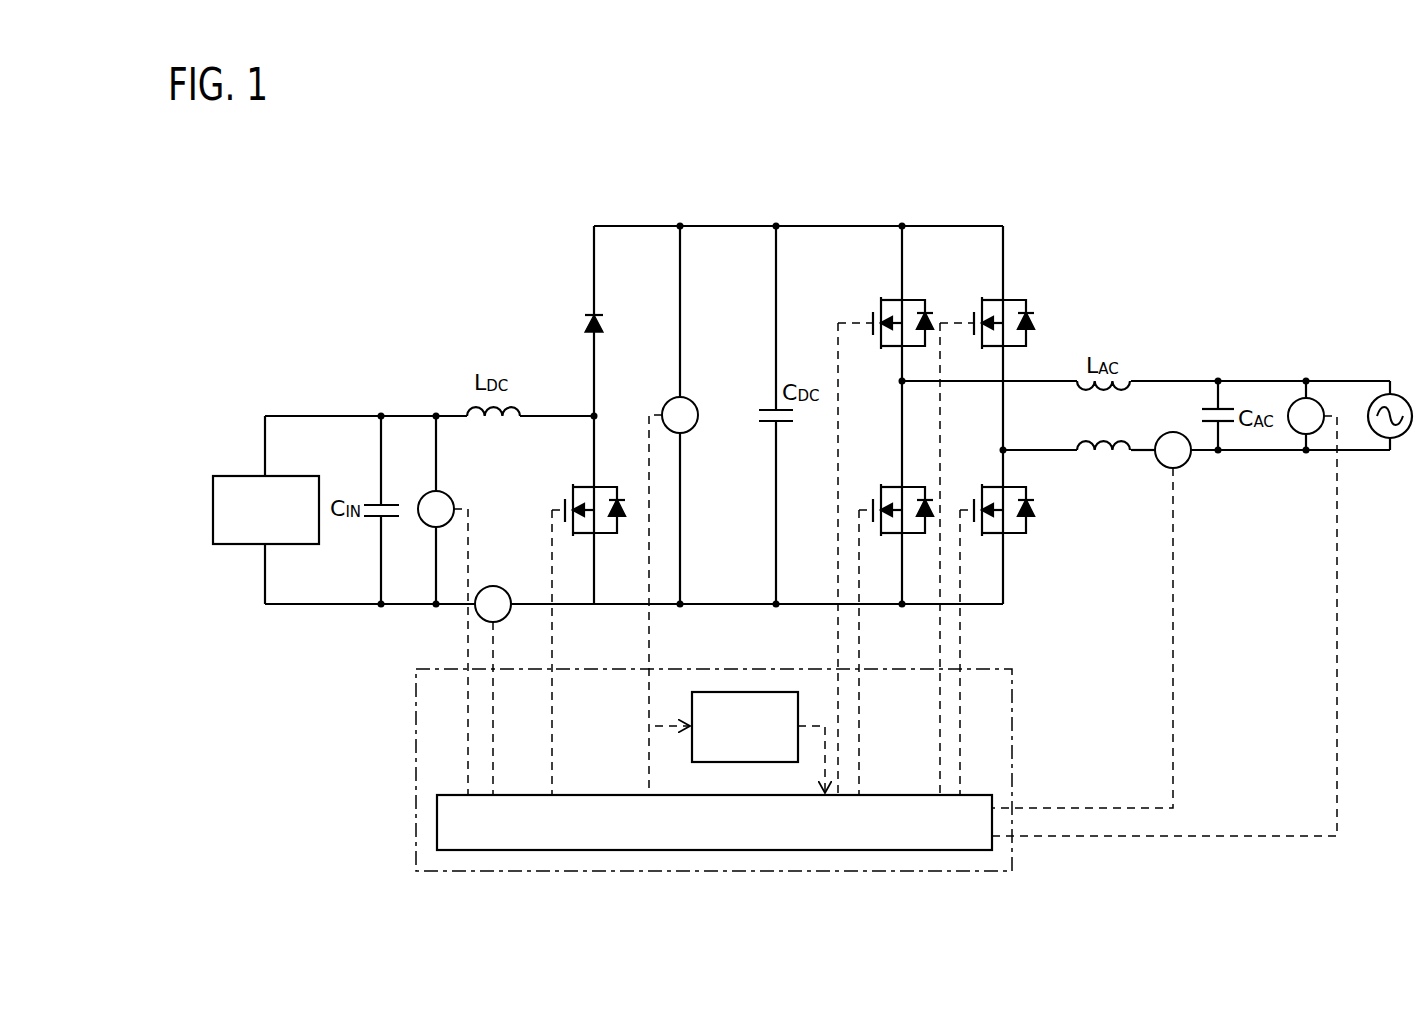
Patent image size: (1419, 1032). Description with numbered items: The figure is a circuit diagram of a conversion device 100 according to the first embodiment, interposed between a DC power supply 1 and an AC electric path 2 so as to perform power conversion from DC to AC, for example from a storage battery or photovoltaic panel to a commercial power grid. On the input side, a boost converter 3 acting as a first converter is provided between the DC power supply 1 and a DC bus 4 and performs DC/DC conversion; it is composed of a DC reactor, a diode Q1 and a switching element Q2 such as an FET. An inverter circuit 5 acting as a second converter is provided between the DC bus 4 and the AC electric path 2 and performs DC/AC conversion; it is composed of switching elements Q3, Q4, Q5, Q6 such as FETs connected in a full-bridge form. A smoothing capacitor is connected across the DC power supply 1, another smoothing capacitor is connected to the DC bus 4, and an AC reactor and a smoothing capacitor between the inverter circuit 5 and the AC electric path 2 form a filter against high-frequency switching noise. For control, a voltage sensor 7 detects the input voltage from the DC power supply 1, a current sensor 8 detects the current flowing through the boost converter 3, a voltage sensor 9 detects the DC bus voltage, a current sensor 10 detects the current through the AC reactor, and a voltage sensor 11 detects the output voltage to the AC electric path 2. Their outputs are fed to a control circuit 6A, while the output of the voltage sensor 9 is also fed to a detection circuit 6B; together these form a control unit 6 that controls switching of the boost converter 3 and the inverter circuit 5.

The DC power supply 1 is at (252, 475).
The AC electric path 2 is at (1400, 394).
The boost converter 3 is at (553, 383).
The DC bus 4 is at (747, 223).
The inverter circuit 5 is at (957, 205).
The control unit 6 is at (416, 768).
The control circuit 6A is at (602, 795).
The detection circuit 6B is at (745, 692).
The voltage sensor 7 is at (445, 492).
The current sensor 8 is at (493, 586).
The voltage sensor 9 is at (693, 400).
The current sensor 10 is at (1162, 469).
The voltage sensor 11 is at (1298, 399).
The conversion device 100 is at (833, 162).
The diode Q1 is at (585, 320).
The switching element Q2 is at (566, 487).
The switching element Q3 is at (878, 300).
The switching element Q4 is at (875, 487).
The switching element Q5 is at (975, 300).
The switching element Q6 is at (975, 487).